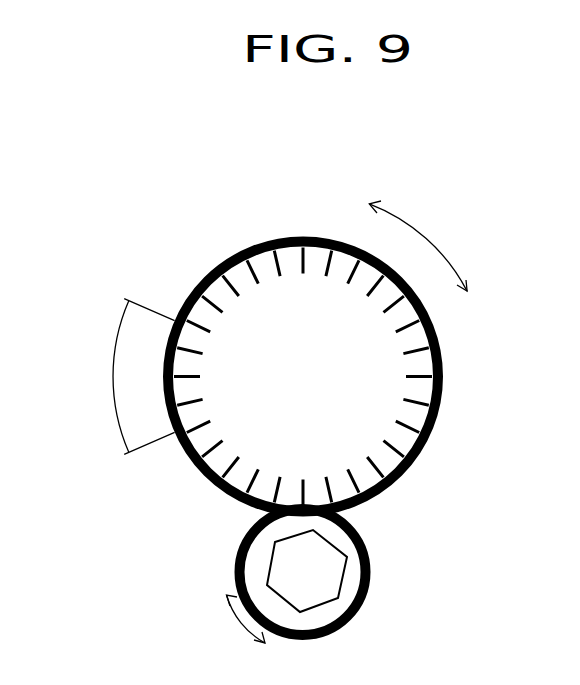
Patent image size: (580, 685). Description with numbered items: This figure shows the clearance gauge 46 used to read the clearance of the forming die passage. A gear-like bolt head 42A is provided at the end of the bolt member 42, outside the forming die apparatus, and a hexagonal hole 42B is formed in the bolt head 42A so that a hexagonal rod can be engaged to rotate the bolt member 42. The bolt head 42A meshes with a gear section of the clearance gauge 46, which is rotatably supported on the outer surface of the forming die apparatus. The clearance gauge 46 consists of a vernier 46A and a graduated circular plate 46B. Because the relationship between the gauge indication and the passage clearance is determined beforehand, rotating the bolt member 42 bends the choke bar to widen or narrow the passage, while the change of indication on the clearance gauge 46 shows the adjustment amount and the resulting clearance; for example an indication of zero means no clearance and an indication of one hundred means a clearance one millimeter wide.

The clearance gauge 46 is at (287, 321).
The vernier 46A is at (118, 397).
The graduated circular plate 46B is at (378, 401).
The bolt member 42 is at (299, 564).
The bolt head 42A is at (343, 540).
The hexagonal hole 42B is at (322, 575).